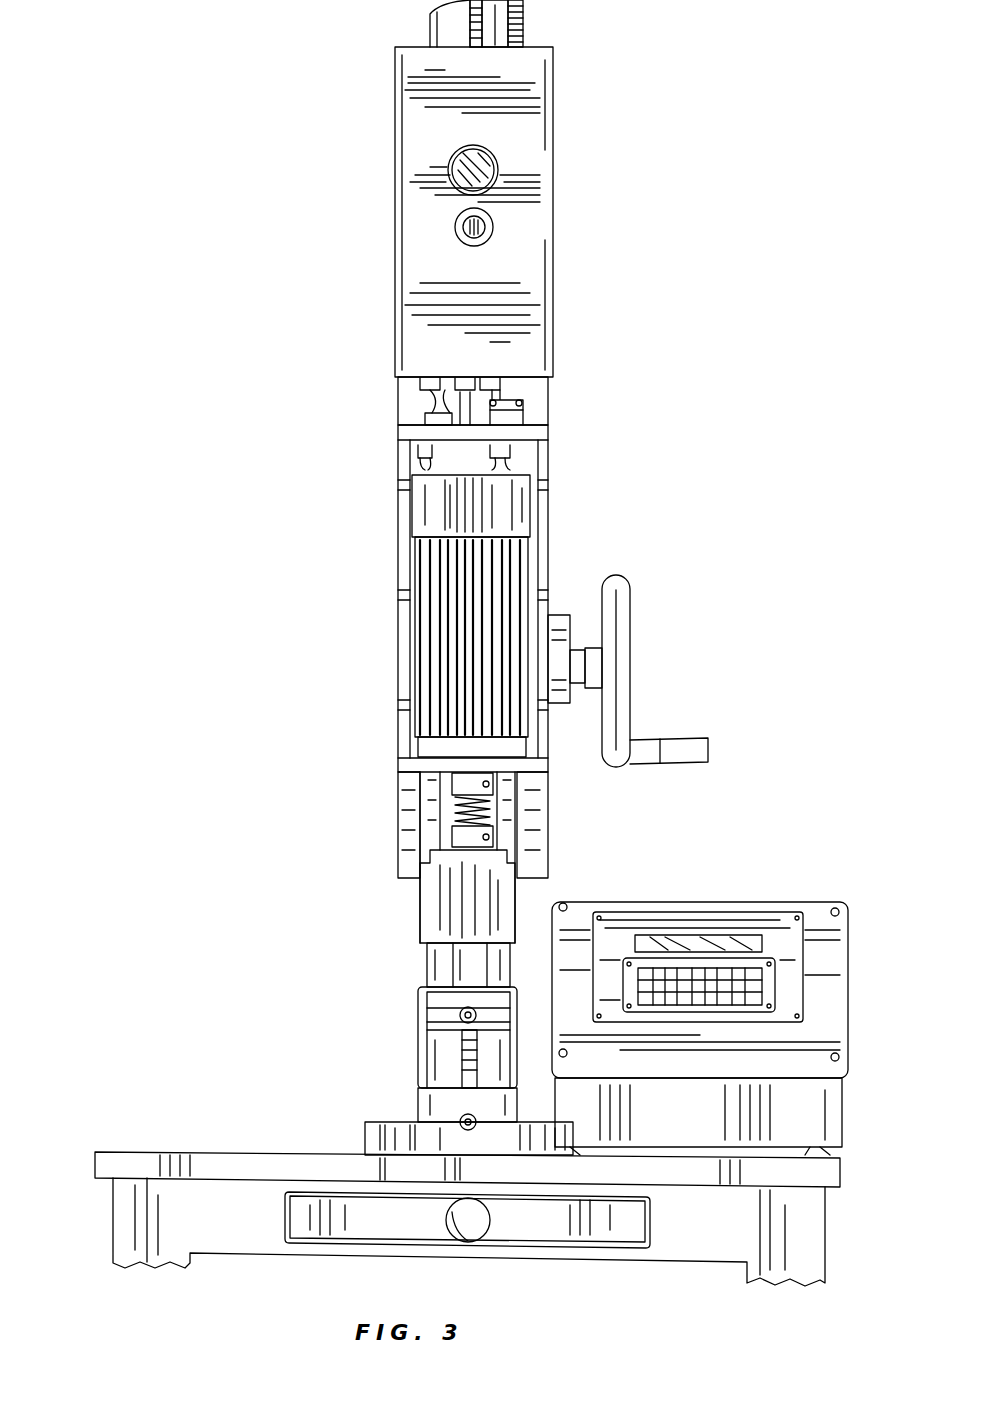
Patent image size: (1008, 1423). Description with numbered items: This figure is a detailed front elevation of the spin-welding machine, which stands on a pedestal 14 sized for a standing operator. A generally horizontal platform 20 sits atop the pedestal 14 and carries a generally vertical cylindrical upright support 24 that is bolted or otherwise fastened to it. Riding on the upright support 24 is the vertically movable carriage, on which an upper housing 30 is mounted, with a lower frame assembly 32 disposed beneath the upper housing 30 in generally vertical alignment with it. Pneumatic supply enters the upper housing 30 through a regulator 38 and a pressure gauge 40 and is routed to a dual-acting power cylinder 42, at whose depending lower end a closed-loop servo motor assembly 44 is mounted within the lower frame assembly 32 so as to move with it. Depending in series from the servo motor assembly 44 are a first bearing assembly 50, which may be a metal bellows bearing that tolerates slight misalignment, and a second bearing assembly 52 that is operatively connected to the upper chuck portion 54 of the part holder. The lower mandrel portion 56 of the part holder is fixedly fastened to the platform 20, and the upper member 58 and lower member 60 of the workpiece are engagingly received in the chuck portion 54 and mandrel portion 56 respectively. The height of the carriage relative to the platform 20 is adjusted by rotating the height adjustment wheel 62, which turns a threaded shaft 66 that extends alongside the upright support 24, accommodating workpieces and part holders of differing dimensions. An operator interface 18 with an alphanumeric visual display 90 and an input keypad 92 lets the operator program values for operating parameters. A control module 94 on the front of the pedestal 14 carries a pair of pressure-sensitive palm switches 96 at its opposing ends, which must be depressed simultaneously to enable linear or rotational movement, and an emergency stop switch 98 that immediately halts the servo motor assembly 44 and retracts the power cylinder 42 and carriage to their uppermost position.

The pedestal 14 is at (113, 1240).
The operator interface 18 is at (832, 1003).
The platform 20 is at (142, 1152).
The upright support 24 is at (433, 27).
The upper housing 30 is at (537, 272).
The lower frame assembly 32 is at (392, 706).
The regulator 38 is at (498, 160).
The pressure gauge 40 is at (455, 227).
The dual-acting power cylinder 42 is at (470, 410).
The servo motor assembly 44 is at (468, 628).
The first bearing assembly 50 is at (453, 817).
The second bearing assembly 52 is at (452, 955).
The upper chuck portion 54 is at (430, 1000).
The lower mandrel portion 56 is at (365, 1137).
The upper member 58 is at (440, 1030).
The lower member 60 is at (418, 1105).
The height adjustment wheel 62 is at (617, 650).
The threaded shaft 66 is at (522, 22).
The alphanumeric visual display 90 is at (717, 942).
The input keypad 92 is at (750, 988).
The control module 94 is at (382, 1220).
The pressure-sensitive switches 96 is at (285, 1222).
The emergency stop switch 98 is at (468, 1236).